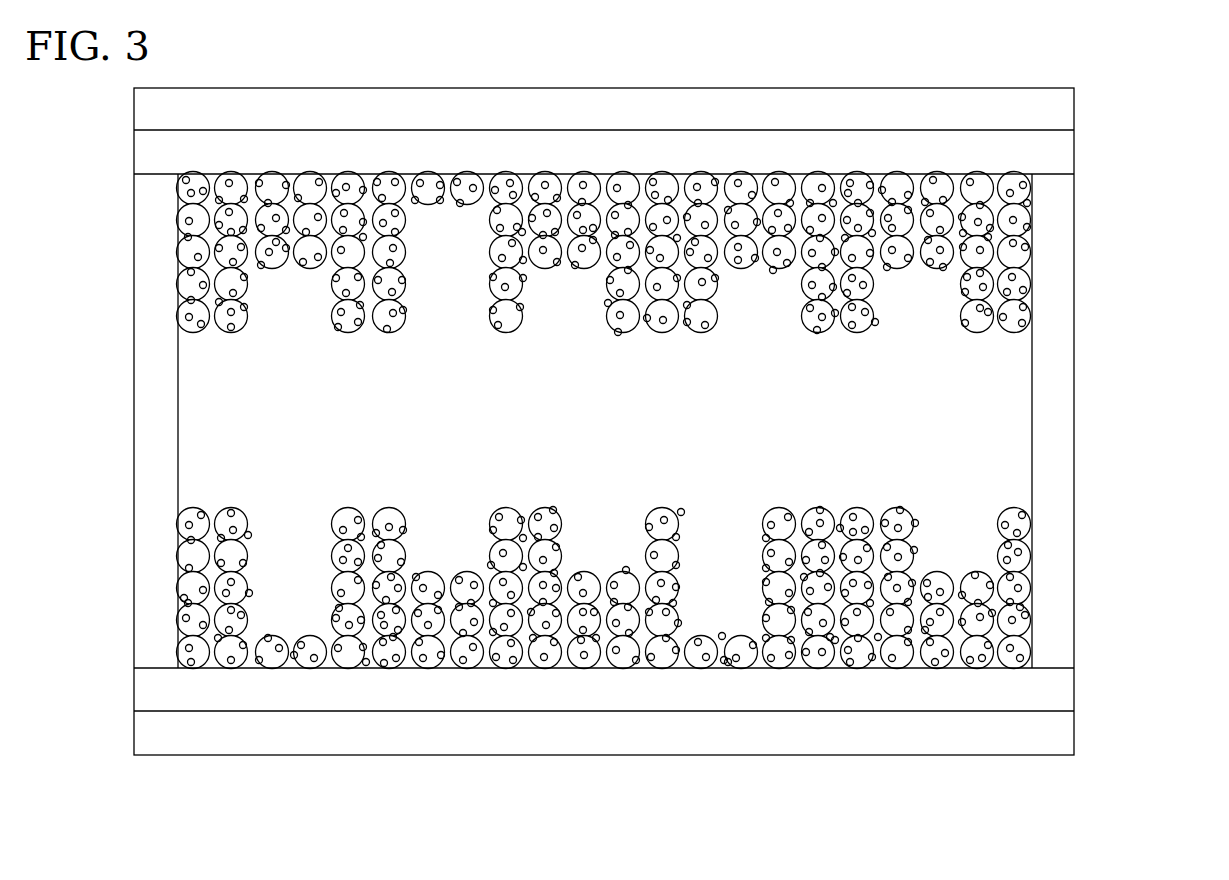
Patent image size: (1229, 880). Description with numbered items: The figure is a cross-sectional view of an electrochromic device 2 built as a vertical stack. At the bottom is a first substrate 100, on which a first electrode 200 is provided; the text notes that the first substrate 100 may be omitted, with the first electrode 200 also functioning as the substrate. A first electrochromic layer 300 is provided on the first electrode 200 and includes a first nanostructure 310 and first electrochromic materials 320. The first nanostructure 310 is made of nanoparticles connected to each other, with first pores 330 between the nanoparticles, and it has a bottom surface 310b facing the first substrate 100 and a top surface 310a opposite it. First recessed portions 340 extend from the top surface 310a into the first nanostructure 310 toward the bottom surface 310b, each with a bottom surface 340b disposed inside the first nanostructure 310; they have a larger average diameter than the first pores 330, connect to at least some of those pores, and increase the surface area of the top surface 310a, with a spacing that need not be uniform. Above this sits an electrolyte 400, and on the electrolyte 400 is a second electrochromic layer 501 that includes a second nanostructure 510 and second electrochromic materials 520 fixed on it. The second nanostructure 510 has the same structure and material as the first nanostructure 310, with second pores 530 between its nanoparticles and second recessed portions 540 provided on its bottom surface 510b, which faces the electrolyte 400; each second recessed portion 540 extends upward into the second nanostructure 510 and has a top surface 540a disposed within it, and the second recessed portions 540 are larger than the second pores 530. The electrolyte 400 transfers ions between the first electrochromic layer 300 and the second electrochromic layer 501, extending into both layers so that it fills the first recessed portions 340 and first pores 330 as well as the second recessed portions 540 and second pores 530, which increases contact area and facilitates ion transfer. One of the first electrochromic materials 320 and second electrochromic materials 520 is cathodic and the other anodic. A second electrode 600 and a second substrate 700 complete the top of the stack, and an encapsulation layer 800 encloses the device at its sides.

The electrochromic device 2 is at (1098, 41).
The first substrate 100 is at (142, 734).
The first electrode 200 is at (142, 689).
The first electrochromic layer 300 is at (695, 639).
The first nanostructure 310 is at (667, 505).
The top surface of the first nanostructure 310a is at (858, 508).
The bottom surface of the first nanostructure 310b is at (1016, 668).
The first electrochromic materials 320 is at (1018, 558).
The first pores 330 is at (1015, 593).
The first recessed portion 340 is at (916, 551).
The bottom surface of the first recessed portion 340b is at (716, 640).
The electrolyte 400 is at (1017, 436).
The second electrochromic layer 501 is at (695, 201).
The second nanostructure 510 is at (1023, 193).
The bottom surface of the second nanostructure 510b is at (974, 338).
The second electrochromic materials 520 is at (1031, 224).
The second pores 530 is at (1005, 258).
The second recessed portion 540 is at (877, 316).
The top surface of the second recessed portion 540a is at (760, 268).
The second electrode 600 is at (142, 154).
The second substrate 700 is at (142, 110).
The encapsulation layer 800 is at (1065, 397).